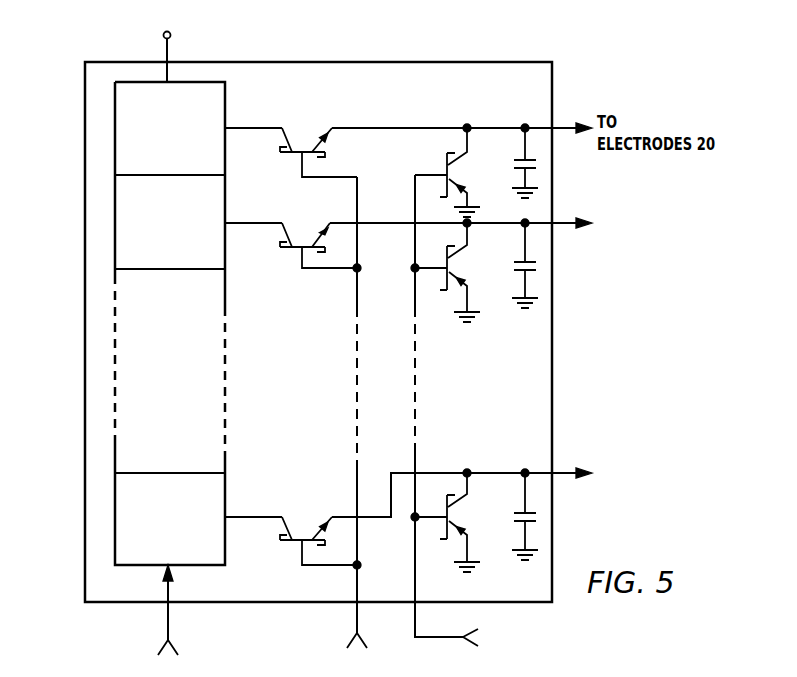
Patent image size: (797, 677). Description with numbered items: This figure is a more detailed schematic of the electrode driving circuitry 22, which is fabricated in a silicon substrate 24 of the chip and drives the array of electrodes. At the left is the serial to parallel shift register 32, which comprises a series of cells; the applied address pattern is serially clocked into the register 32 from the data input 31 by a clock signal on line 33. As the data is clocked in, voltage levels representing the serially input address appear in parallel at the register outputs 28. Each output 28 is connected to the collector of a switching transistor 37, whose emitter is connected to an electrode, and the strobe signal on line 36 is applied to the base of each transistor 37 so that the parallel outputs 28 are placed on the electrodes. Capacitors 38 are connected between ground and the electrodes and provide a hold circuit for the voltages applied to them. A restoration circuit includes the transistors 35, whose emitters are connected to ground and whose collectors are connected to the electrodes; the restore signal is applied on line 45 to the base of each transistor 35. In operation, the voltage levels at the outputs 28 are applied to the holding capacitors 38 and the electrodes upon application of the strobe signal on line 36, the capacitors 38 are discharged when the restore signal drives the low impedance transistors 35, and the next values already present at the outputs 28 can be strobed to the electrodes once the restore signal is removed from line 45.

The electrode driving circuitry 22 is at (548, 49).
The substrate 24 is at (494, 652).
The register outputs 28 is at (253, 128).
The input 31 is at (175, 590).
The serial to parallel shift register 32 is at (120, 205).
The line 33 is at (172, 42).
The transistors 35 is at (455, 154).
The line 36 is at (357, 390).
The switching transistor 37 is at (293, 148).
The capacitors 38 is at (525, 158).
The line 45 is at (418, 373).